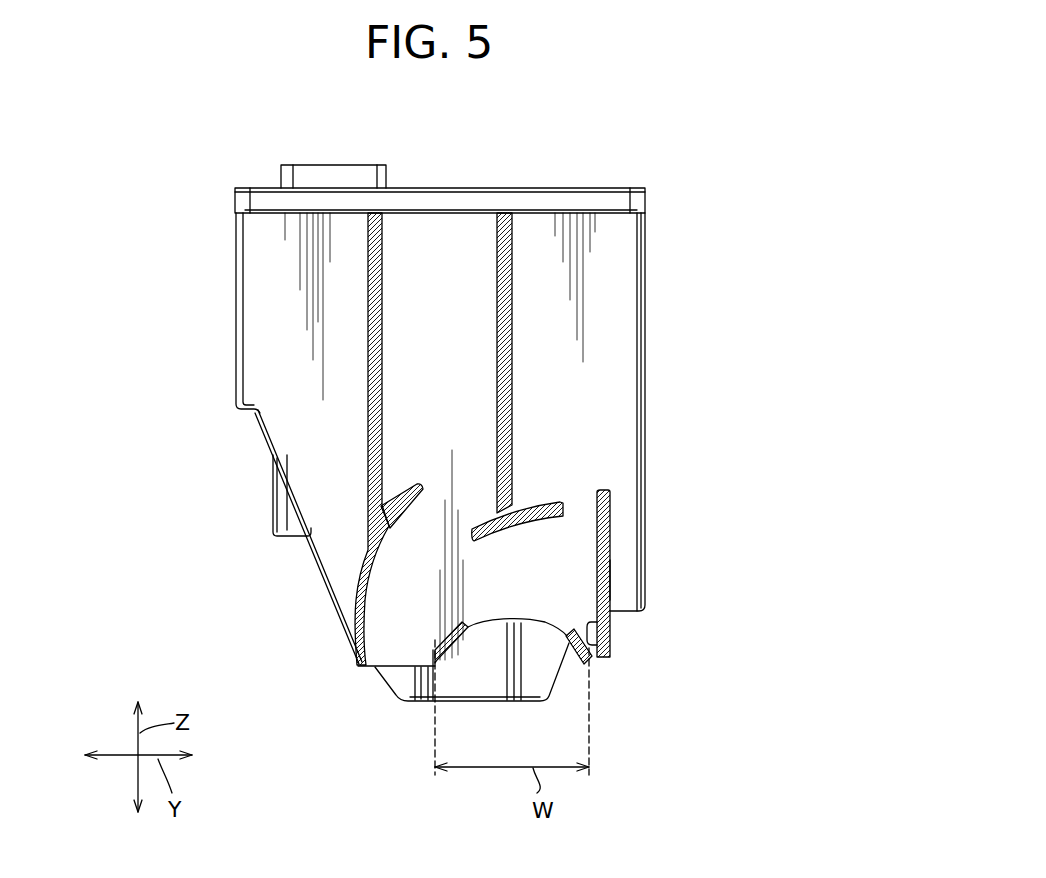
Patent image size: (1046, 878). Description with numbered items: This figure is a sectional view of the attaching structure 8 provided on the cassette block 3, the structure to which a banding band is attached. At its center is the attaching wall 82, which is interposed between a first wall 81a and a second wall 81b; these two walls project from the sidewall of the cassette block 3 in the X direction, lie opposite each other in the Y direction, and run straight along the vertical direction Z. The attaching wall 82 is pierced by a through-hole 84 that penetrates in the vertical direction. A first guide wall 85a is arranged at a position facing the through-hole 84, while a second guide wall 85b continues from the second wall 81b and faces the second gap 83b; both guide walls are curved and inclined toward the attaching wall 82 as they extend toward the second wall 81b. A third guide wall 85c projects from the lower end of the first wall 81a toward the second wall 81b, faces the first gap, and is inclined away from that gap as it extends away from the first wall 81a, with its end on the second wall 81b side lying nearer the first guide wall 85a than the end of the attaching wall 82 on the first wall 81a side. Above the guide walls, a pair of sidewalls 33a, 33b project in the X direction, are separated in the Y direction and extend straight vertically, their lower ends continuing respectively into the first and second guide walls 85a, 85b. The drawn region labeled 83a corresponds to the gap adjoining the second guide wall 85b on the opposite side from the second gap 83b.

The cassette block 3 is at (638, 168).
The sidewall 33a is at (512, 298).
The sidewall 33b is at (368, 296).
The first guide wall 85a is at (548, 503).
The second guide wall 85b is at (393, 510).
The third guide wall 85c is at (600, 624).
The attaching structure 8 is at (614, 541).
The first wall 81a is at (612, 580).
The second wall 81b is at (353, 642).
The attaching wall 82 is at (436, 660).
The bent portion 83a is at (599, 658).
The second gap 83b is at (382, 656).
The through-hole 84 is at (503, 619).